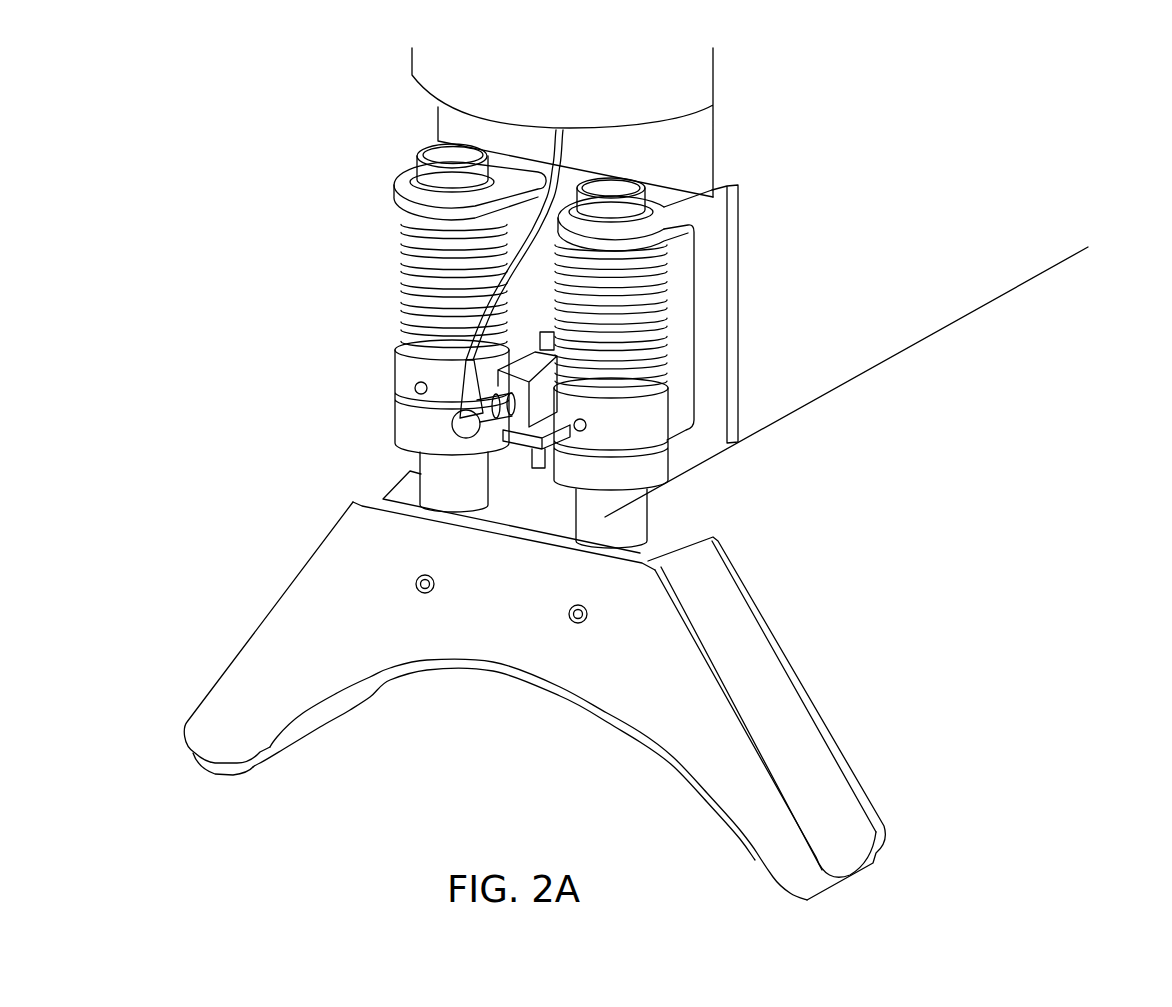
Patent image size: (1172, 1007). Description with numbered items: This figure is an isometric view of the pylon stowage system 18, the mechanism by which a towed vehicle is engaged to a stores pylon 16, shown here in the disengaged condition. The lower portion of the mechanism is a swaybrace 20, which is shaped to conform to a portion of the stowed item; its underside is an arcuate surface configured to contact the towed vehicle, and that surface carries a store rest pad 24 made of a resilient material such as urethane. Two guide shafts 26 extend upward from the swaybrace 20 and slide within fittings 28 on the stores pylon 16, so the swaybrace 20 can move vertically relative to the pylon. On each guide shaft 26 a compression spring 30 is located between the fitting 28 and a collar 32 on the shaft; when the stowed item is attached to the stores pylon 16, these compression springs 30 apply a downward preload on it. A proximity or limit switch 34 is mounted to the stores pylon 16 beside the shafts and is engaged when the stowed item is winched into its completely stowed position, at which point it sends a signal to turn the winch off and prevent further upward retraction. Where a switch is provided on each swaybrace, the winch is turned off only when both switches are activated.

The stores pylon 16 is at (915, 278).
The pylon stowage system 18 is at (910, 610).
The swaybrace 20 is at (232, 662).
The store rest pad 24 is at (630, 730).
The guide shaft 26 is at (630, 512).
The fitting 28 is at (713, 403).
The compression spring 30 is at (633, 397).
The collar 32 is at (395, 380).
The proximity or limit switch 34 is at (510, 363).